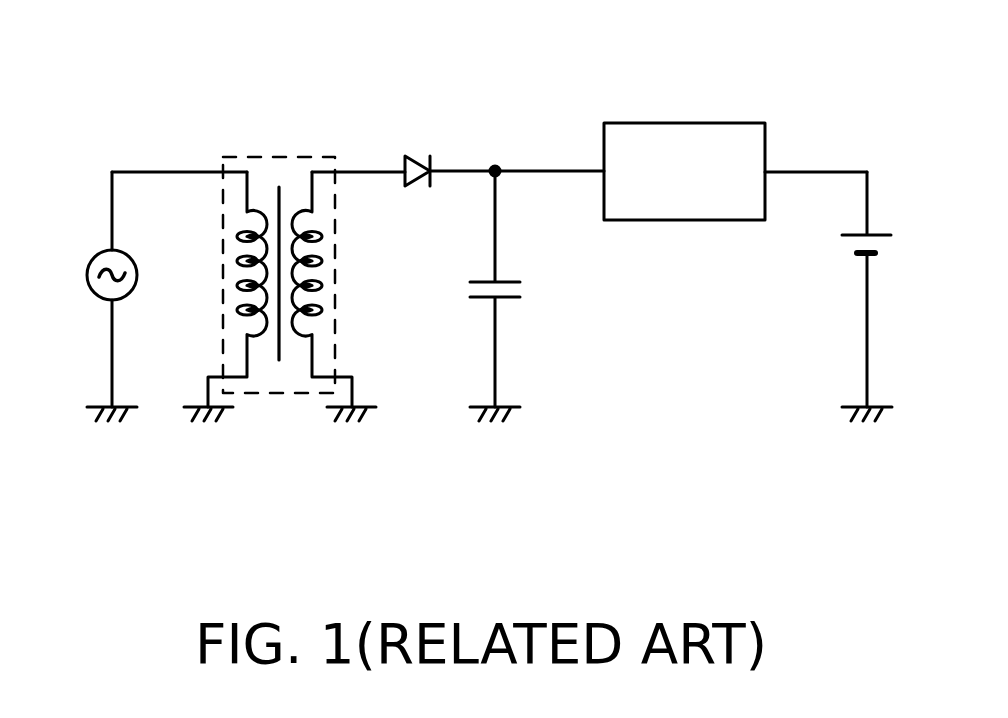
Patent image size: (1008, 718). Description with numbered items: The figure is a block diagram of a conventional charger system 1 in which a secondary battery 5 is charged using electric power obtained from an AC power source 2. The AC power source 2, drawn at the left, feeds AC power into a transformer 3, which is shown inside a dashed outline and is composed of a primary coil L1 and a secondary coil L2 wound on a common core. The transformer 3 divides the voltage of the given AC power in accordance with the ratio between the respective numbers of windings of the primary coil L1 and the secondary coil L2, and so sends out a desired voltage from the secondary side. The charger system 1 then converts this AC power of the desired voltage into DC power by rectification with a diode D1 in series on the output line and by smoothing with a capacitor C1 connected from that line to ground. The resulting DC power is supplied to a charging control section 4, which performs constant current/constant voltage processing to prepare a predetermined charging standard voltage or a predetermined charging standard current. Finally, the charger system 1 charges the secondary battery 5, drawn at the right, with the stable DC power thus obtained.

The charger system 1 is at (467, 210).
The AC power source 2 is at (93, 262).
The transformer 3 is at (262, 156).
The primary coil L1 is at (230, 249).
The secondary coil L2 is at (327, 272).
The diode D1 is at (413, 155).
The capacitor C1 is at (512, 298).
The charging control section 4 is at (683, 123).
The secondary battery 5 is at (878, 232).